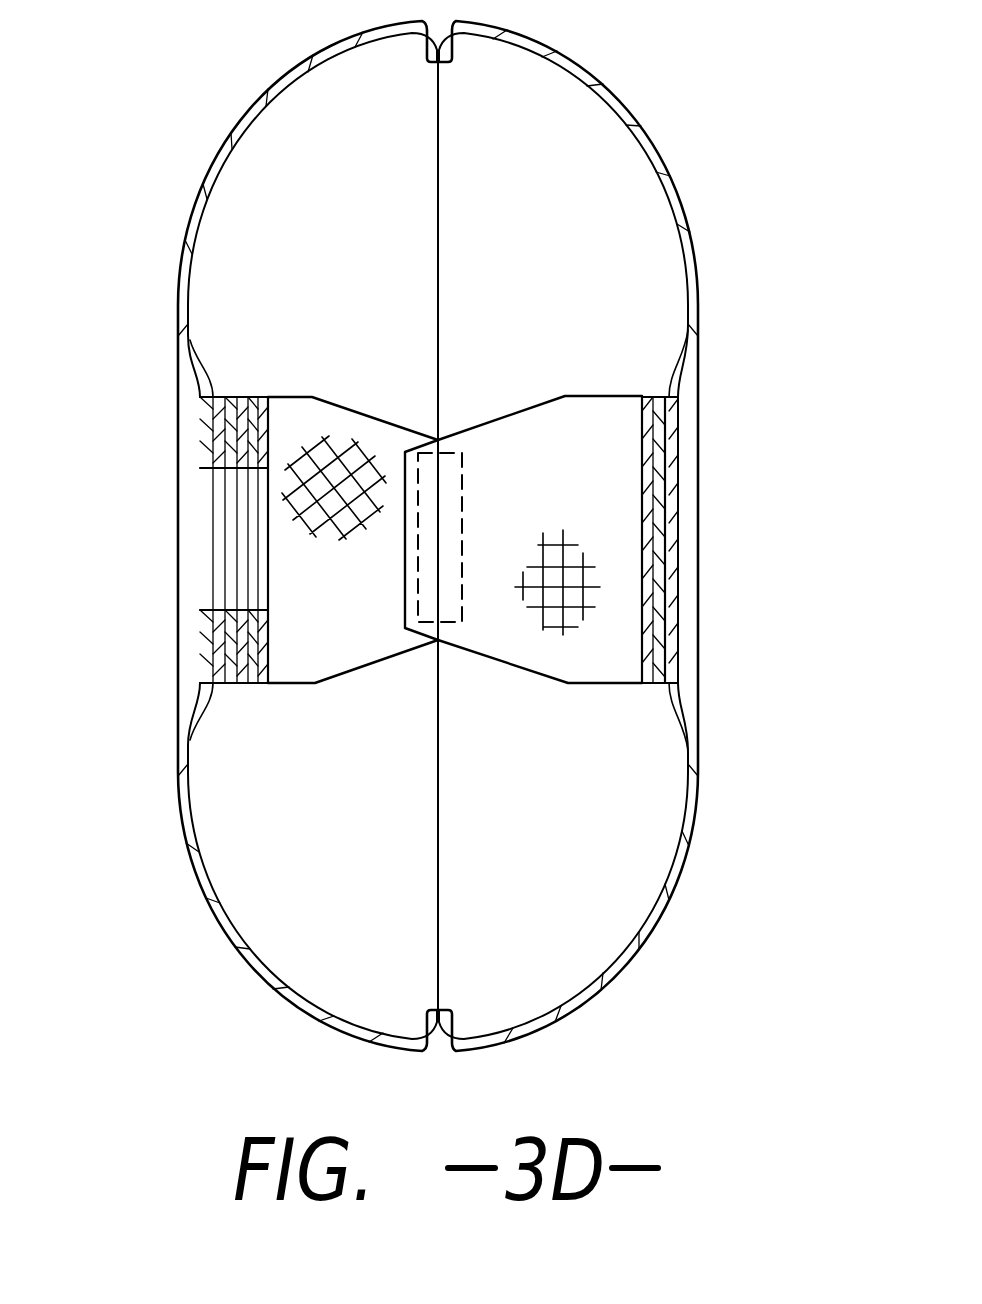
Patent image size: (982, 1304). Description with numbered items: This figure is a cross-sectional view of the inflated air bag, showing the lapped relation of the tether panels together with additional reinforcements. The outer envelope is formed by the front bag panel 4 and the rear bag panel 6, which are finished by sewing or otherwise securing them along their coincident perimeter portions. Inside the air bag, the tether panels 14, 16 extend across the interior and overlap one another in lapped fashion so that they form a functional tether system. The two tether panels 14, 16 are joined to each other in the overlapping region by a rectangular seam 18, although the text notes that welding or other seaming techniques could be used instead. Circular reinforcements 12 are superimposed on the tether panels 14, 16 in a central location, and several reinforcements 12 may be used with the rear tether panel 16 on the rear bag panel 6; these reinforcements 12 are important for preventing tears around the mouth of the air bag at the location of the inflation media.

The front bag panel 4 is at (641, 122).
The rear bag panel 6 is at (207, 173).
The reinforcement 12 is at (257, 397).
The tether panel 14 is at (515, 412).
The tether panel 16 is at (347, 405).
The rectangular seam 18 is at (462, 567).